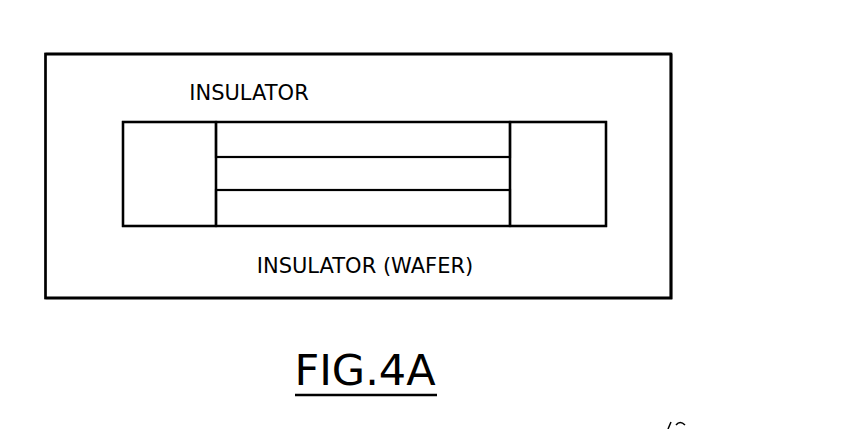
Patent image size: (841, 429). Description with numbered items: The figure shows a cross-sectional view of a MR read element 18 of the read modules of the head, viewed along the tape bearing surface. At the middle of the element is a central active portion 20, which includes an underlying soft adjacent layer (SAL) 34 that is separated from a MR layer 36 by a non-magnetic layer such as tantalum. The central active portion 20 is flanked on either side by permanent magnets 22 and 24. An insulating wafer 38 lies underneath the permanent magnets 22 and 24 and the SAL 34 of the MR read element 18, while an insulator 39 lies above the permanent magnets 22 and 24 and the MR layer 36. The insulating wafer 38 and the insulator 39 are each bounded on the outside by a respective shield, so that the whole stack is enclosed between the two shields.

The MR read element 18 is at (702, 70).
The central active portion 20 is at (378, 105).
The permanent magnet 22 is at (122, 153).
The permanent magnet 24 is at (600, 173).
The soft adjacent layer (SAL) 34 is at (488, 212).
The MR layer 36 is at (452, 130).
The insulating wafer 38 is at (667, 245).
The insulator 39 is at (592, 58).